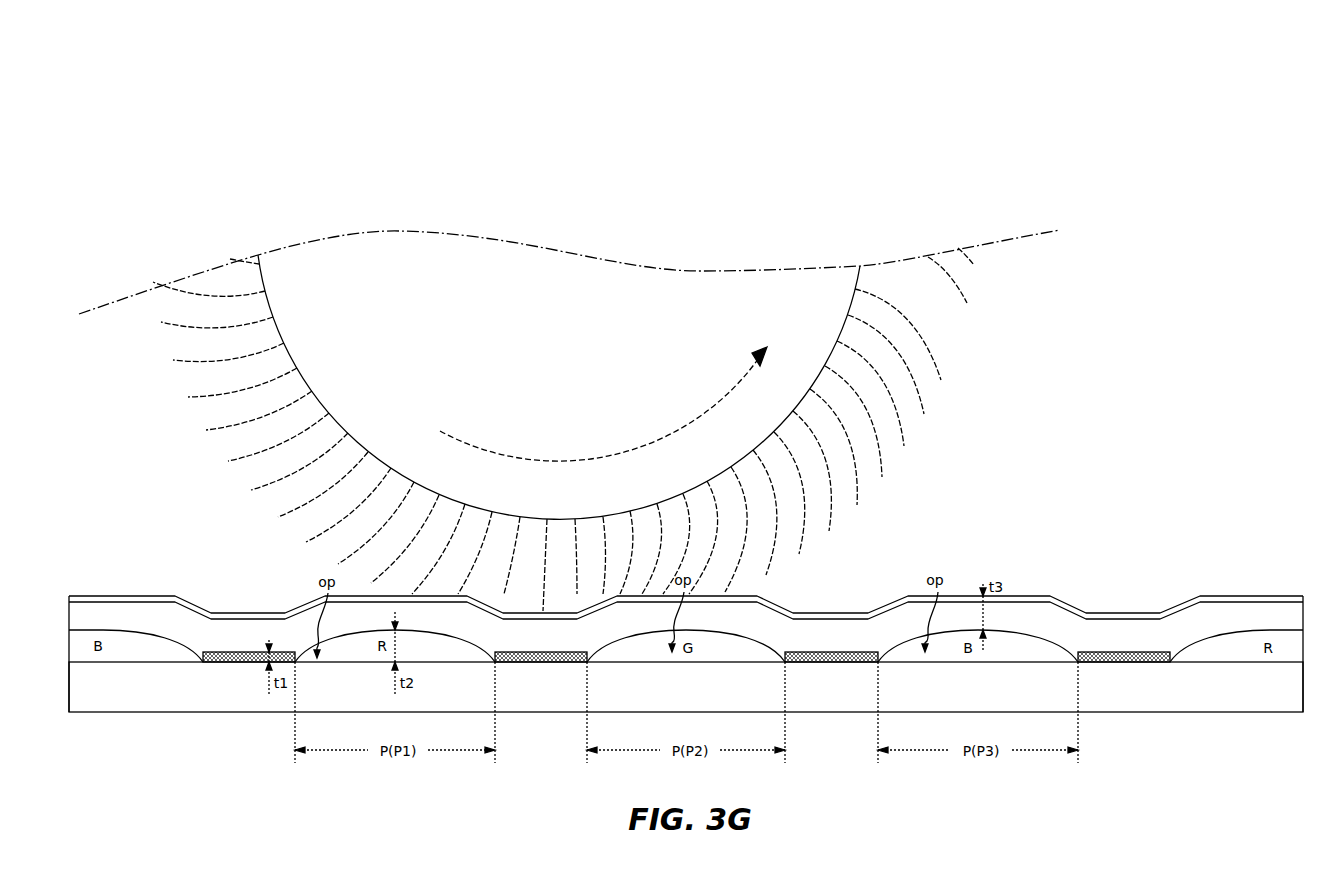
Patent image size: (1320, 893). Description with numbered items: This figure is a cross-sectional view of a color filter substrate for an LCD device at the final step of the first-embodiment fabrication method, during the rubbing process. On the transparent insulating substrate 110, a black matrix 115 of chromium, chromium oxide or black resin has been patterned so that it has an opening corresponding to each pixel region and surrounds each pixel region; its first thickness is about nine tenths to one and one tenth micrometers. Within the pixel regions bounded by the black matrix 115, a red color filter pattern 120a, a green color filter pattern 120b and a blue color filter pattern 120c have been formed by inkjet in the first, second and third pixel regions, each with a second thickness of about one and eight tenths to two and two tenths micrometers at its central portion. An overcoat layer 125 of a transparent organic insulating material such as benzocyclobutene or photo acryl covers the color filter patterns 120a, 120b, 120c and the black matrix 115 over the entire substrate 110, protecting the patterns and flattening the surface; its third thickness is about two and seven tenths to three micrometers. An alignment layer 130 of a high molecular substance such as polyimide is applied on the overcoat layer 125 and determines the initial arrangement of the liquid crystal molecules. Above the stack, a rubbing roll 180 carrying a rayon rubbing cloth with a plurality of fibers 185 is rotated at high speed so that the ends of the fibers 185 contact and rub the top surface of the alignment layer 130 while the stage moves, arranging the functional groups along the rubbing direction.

The transparent insulating substrate 110 is at (1293, 704).
The black matrix 115 is at (252, 651).
The red color filter pattern 120a is at (447, 650).
The green color filter pattern 120b is at (122, 645).
The blue color filter pattern 120c is at (1007, 645).
The overcoat layer 125 is at (175, 623).
The alignment layer 130 is at (85, 597).
The rubbing roll 180 is at (680, 310).
The fibers 185 is at (962, 325).